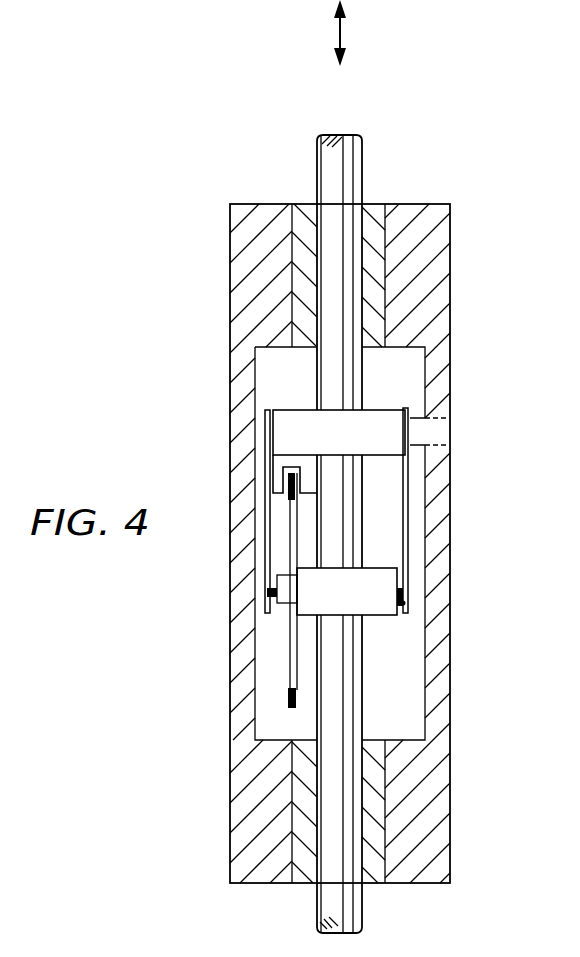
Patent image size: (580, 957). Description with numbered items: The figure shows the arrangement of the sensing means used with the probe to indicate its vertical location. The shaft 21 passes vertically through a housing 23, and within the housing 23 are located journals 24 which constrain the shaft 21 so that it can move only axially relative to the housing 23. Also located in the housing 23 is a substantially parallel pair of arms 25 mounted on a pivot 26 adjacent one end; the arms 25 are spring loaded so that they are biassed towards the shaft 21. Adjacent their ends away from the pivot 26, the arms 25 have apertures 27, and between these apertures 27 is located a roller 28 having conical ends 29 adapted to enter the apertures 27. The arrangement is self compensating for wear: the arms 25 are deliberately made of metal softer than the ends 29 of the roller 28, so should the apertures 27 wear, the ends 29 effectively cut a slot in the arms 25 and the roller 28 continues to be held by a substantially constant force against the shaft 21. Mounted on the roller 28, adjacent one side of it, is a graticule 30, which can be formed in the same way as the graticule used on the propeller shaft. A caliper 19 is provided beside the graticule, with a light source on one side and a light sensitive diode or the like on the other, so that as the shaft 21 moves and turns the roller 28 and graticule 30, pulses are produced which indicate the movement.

The caliper 19 is at (277, 470).
The shaft 21 is at (348, 165).
The housing 23 is at (427, 232).
The journals 24 is at (372, 320).
The arms 25 is at (256, 525).
The pivot 26 is at (436, 430).
The apertures 27 is at (414, 592).
The roller 28 is at (362, 598).
The conical ends 29 is at (412, 610).
The graticule 30 is at (302, 698).